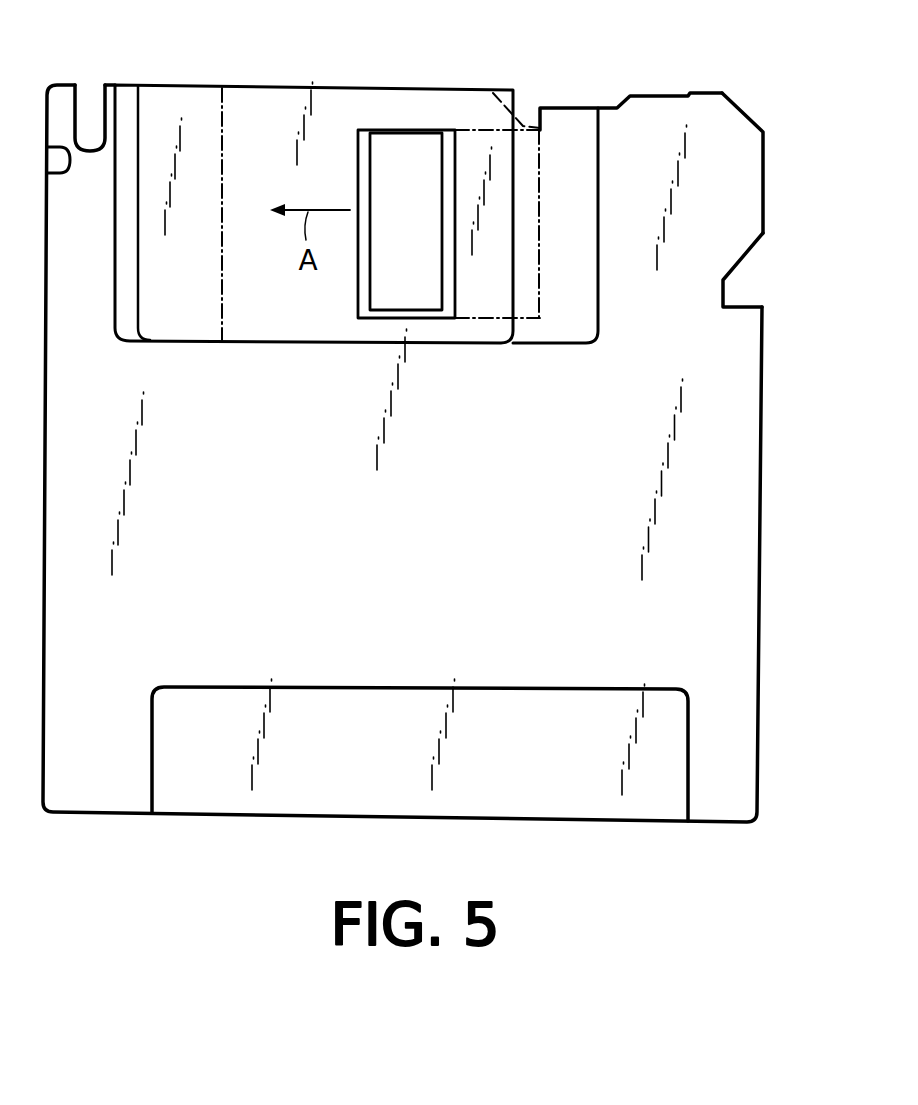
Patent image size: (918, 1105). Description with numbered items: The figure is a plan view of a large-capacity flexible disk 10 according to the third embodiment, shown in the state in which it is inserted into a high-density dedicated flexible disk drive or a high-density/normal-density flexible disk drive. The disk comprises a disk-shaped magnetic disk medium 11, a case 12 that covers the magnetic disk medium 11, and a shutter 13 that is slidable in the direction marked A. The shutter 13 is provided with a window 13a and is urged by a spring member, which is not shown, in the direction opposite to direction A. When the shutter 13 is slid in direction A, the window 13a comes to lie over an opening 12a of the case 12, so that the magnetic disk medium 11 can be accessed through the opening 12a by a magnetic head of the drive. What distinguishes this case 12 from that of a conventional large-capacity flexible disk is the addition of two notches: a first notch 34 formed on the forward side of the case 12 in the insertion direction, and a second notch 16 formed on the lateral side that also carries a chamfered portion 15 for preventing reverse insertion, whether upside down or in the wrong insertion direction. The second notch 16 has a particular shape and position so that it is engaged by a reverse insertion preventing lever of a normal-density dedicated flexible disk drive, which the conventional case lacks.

The large-capacity flexible disk 10 is at (85, 820).
The magnetic disk medium 11 is at (418, 247).
The case 12 is at (748, 503).
The opening 12a is at (442, 163).
The shutter 13 is at (318, 313).
The window 13a is at (442, 320).
The chamfered portion 15 is at (740, 110).
The second notch 16 is at (738, 287).
The first notch 34 is at (93, 97).